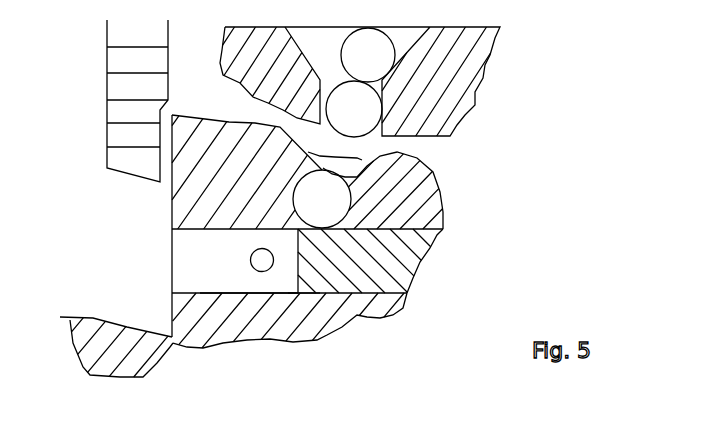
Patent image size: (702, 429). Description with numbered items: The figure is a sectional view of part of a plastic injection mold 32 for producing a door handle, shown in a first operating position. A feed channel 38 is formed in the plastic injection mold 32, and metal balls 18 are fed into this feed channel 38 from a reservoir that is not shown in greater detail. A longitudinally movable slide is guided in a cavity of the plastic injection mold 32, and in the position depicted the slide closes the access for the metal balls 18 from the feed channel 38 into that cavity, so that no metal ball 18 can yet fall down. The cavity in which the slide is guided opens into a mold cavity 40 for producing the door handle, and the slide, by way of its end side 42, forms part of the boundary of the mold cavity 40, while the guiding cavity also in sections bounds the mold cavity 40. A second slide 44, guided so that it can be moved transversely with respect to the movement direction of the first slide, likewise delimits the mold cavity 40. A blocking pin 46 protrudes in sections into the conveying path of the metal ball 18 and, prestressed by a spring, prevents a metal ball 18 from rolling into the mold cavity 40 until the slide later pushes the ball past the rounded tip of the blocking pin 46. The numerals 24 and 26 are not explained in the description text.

The metal ball 18 is at (327, 199).
The gap 24 is at (203, 272).
The bearing ring 26 is at (400, 252).
The plastic injection mold 32 is at (247, 322).
The feed channel 38 is at (372, 162).
The mold cavity 40 is at (120, 250).
The end side 42 is at (288, 294).
The second slide 44 is at (123, 92).
The blocking pin 46 is at (262, 248).